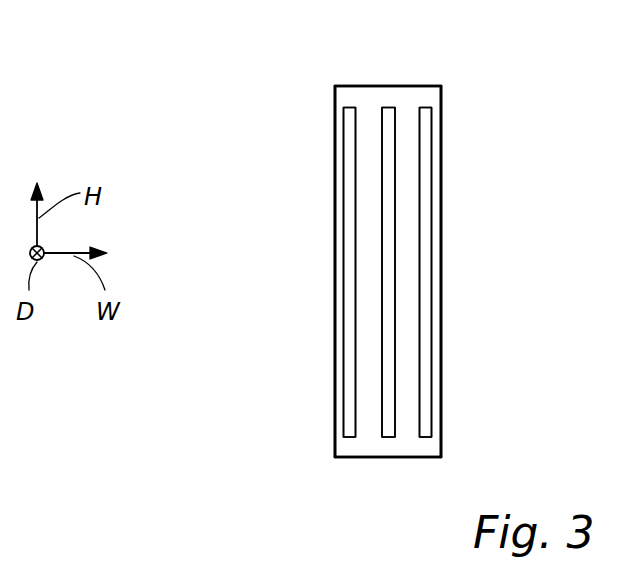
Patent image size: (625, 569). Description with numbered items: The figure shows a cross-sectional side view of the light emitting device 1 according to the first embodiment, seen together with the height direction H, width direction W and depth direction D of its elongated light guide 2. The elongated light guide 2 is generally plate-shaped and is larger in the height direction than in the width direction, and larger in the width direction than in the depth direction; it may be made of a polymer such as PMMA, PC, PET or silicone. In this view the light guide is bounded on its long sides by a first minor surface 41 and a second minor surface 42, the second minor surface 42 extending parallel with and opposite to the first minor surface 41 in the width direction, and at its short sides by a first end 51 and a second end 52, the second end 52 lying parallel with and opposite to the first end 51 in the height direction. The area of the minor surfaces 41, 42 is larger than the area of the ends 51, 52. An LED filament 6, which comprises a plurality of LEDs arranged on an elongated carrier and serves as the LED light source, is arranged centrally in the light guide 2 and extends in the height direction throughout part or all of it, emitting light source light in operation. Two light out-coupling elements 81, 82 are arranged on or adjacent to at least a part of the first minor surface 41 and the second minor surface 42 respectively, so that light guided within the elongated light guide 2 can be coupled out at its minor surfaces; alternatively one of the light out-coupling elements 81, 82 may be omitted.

The light emitting device 1 is at (524, 136).
The elongated light guide 2 is at (296, 384).
The LED filament 6 is at (383, 390).
The first minor surface 41 is at (441, 303).
The second minor surface 42 is at (337, 261).
The first end 51 is at (398, 86).
The second end 52 is at (387, 457).
The light out-coupling element 81 is at (428, 402).
The light out-coupling element 82 is at (347, 329).